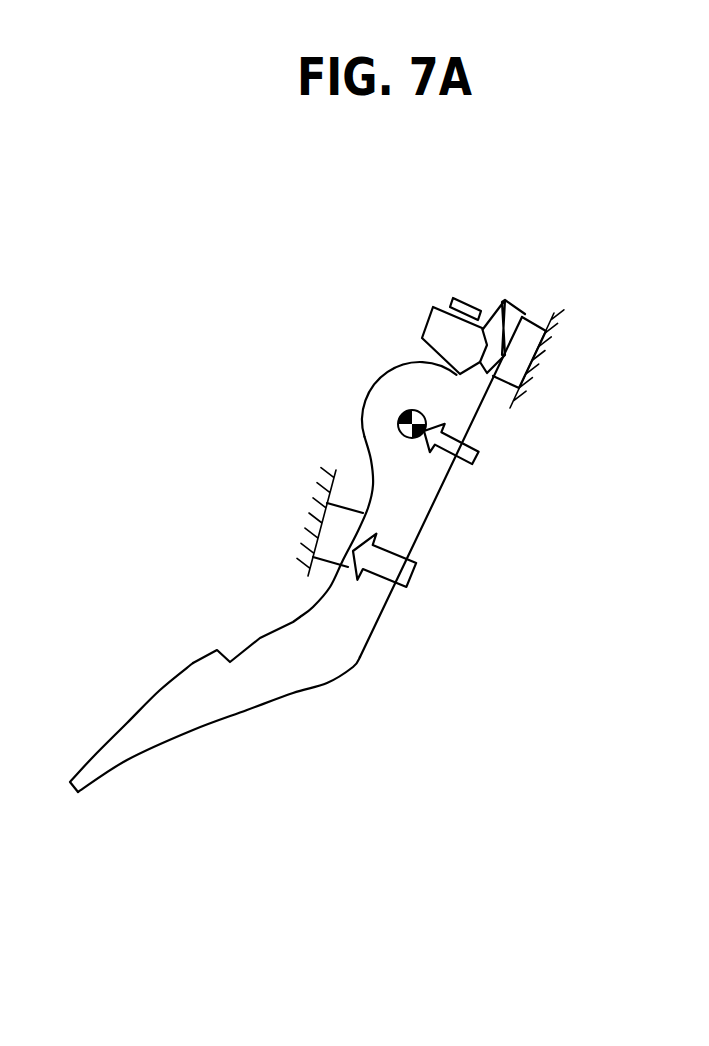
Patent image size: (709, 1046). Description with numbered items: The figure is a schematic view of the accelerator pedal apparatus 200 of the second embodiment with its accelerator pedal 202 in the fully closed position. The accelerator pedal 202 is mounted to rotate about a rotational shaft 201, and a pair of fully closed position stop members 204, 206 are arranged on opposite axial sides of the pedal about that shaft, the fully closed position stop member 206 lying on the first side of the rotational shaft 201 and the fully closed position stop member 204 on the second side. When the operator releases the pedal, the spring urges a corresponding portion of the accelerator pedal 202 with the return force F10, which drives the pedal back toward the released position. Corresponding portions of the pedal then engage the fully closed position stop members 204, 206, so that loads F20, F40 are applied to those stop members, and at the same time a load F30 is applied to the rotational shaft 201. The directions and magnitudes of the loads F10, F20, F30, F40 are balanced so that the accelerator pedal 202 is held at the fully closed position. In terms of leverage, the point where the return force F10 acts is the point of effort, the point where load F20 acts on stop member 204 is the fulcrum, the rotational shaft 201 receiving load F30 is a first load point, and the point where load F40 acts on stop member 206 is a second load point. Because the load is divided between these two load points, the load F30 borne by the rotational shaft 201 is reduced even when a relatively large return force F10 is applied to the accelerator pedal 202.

The accelerator pedal apparatus 200 is at (517, 206).
The rotational shaft 201 is at (402, 414).
The accelerator pedal 202 is at (290, 673).
The fully closed position stop member 204 is at (523, 348).
The fully closed position stop member 206 is at (318, 538).
The return force F10 is at (437, 327).
The load F20 is at (462, 303).
The load F30 is at (483, 447).
The load F40 is at (402, 573).